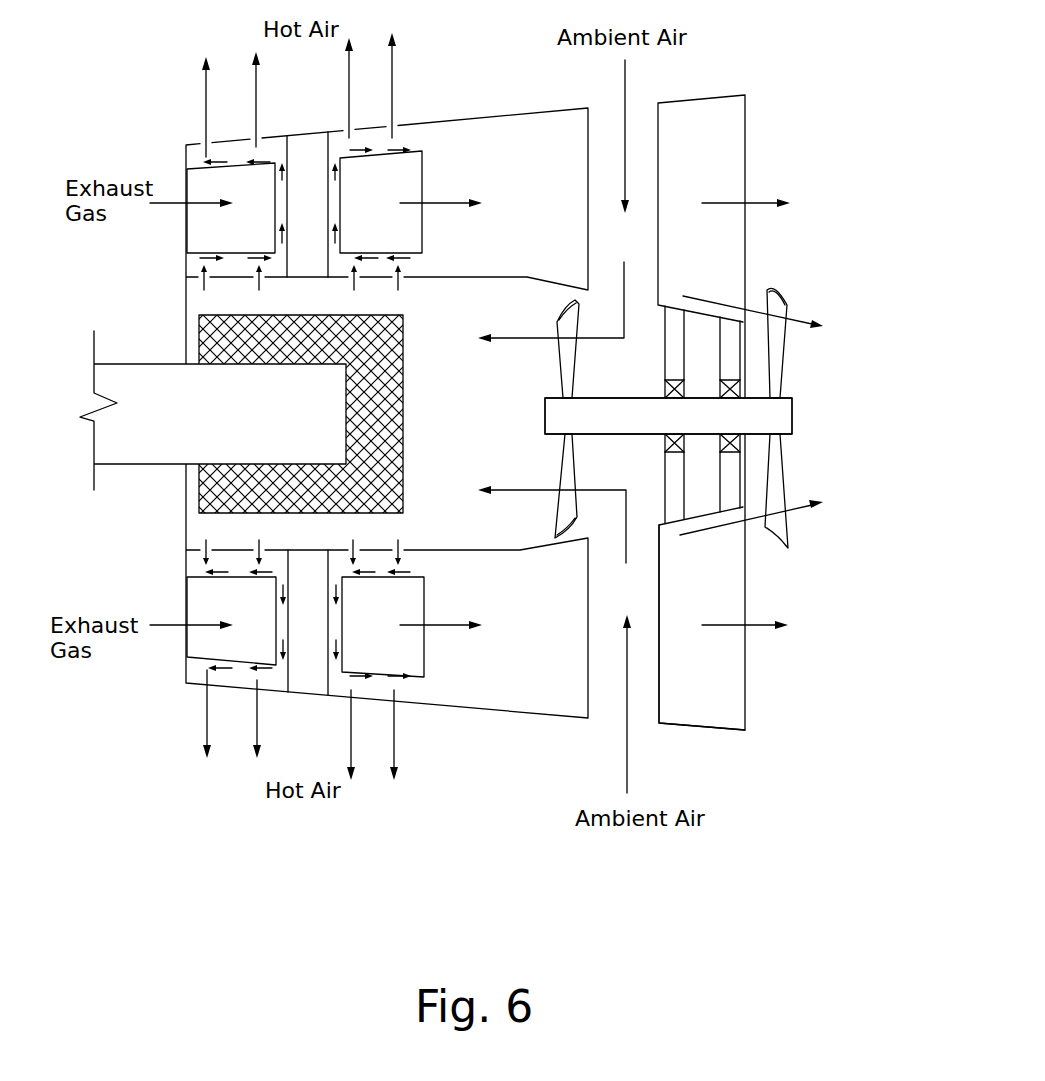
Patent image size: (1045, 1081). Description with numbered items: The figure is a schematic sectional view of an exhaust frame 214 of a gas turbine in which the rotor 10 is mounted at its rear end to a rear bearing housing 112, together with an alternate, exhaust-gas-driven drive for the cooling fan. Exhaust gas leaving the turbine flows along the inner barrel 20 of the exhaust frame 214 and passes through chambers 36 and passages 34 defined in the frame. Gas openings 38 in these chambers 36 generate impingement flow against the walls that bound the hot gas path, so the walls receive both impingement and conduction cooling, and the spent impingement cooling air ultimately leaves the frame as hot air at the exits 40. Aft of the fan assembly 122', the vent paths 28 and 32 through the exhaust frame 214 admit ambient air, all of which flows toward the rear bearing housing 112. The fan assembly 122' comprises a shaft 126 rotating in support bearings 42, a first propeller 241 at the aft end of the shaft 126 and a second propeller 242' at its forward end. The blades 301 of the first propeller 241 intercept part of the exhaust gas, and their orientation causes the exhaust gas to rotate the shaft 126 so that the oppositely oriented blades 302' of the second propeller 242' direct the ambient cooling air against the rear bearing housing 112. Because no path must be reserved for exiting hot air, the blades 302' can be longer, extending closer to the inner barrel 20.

The exhaust frame 214 is at (176, 128).
The inner barrel 20 is at (520, 562).
The chambers 36 is at (273, 265).
The passages 34 is at (328, 137).
The gas openings 38 is at (255, 276).
The exit of exhaust frame 40 is at (404, 99).
The rear bearing housing 112 is at (205, 330).
The rotor 10 is at (140, 450).
The outflow vent passage 32 is at (658, 143).
The vent path 28 is at (659, 682).
The support bearings 42 is at (720, 390).
The shaft 126 is at (598, 420).
The second propeller 242' is at (508, 349).
The fan blades of second propeller 302' is at (527, 486).
The first propeller 241 is at (810, 399).
The fan blades of first propeller 301 is at (780, 528).
The fan assembly 122' is at (743, 448).